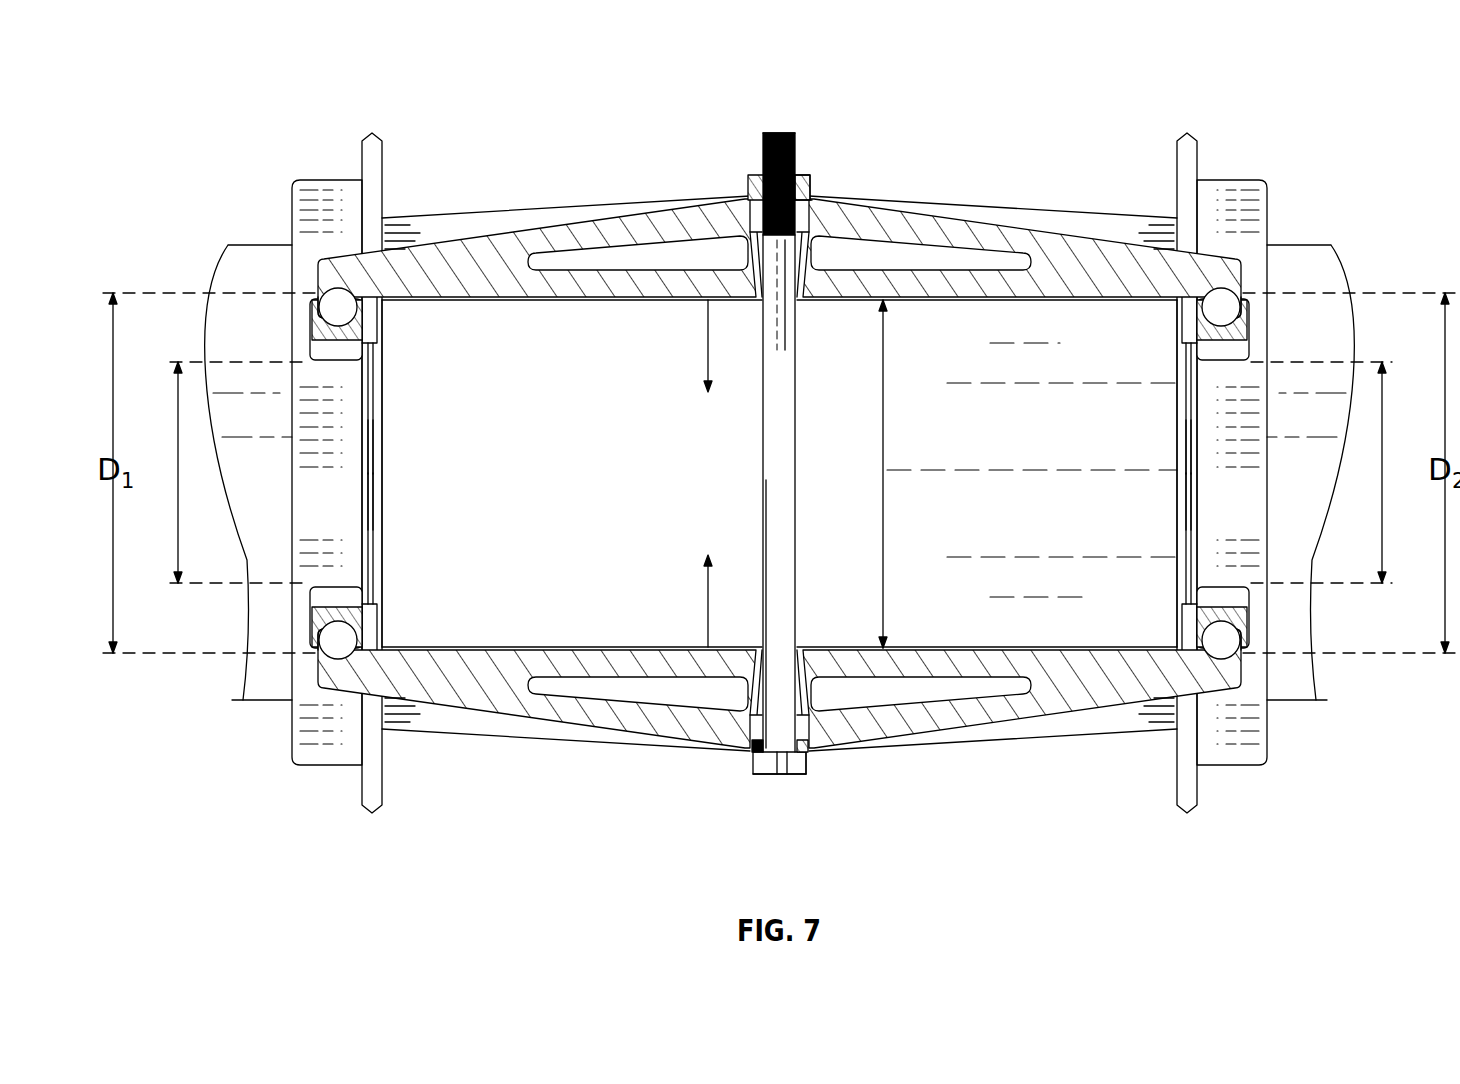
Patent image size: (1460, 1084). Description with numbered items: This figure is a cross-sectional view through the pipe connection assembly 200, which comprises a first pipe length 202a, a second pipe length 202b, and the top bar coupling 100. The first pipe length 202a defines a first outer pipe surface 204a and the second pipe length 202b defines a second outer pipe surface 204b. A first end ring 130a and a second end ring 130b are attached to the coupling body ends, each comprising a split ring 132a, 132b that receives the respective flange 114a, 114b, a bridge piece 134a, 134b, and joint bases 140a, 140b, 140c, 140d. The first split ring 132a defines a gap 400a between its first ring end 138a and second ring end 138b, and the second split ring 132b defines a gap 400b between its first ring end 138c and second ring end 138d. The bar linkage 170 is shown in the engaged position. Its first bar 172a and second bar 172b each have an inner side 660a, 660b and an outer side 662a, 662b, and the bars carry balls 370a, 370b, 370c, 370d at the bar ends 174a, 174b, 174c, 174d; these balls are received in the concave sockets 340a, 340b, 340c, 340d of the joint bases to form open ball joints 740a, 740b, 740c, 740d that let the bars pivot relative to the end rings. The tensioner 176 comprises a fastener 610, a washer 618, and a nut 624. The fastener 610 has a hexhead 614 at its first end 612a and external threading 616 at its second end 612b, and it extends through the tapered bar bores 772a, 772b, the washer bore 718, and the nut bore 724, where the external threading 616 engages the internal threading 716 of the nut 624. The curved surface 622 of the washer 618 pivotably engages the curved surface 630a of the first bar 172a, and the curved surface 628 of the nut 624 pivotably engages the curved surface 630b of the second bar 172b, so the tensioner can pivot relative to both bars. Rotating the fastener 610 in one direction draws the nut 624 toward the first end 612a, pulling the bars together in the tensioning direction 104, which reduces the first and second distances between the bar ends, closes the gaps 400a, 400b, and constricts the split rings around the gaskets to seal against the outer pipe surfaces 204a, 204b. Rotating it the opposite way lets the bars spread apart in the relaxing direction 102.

The top bar coupling 100 is at (985, 136).
The pipe connection assembly 200 is at (178, 99).
The relaxing direction 102 is at (884, 473).
The tensioning direction 104 is at (706, 318).
The first flange 114a is at (381, 455).
The second flange 114b is at (1185, 467).
The first end ring 130a is at (332, 182).
The second end ring 130b is at (1283, 152).
The first split ring 132a is at (296, 215).
The second split ring 132b is at (1270, 212).
The bridge piece 134a is at (374, 502).
The bridge piece 134b is at (1200, 508).
The first ring end 138a is at (372, 585).
The second ring end 138b is at (372, 362).
The first ring end 138c is at (1223, 583).
The second ring end 138d is at (1215, 375).
The joint base 140a is at (378, 600).
The joint base 140b is at (376, 358).
The joint base 140c is at (1185, 565).
The joint base 140d is at (1200, 362).
The bar linkage 170 is at (784, 535).
The tensioner 176 is at (784, 477).
The first bar 172a is at (498, 720).
The second bar 172b is at (527, 238).
The first bar end 174a is at (336, 690).
The first bar end 174b is at (330, 290).
The second bar end 174c is at (1244, 655).
The second bar end 174d is at (1224, 278).
The first pipe length 202a is at (236, 252).
The second pipe length 202b is at (1322, 247).
The first outer pipe surface 204a is at (240, 701).
The second outer pipe surface 204b is at (1322, 701).
The concave socket 340a is at (380, 630).
The concave socket 340b is at (378, 328).
The concave socket 340c is at (1210, 608).
The concave socket 340d is at (1181, 328).
The ball 370a is at (330, 625).
The ball 370b is at (330, 330).
The ball 370c is at (1226, 622).
The ball 370d is at (1230, 325).
The gap 400a is at (228, 472).
The gap 400b is at (1329, 472).
The fastener 610 is at (765, 430).
The first end 612a is at (800, 776).
The second end 612b is at (765, 133).
The hexhead 614 is at (768, 776).
The external threading 616 is at (795, 133).
The washer 618 is at (806, 746).
The curved surface 622 is at (742, 738).
The nut 624 is at (812, 183).
The curved surface 628 is at (742, 212).
The curved surface 630a is at (755, 764).
The curved surface 630b is at (752, 183).
The inner side 660a is at (650, 648).
The inner side 660b is at (507, 300).
The outer side 662a is at (588, 736).
The outer side 662b is at (588, 214).
The internal threading 716 is at (797, 180).
The washer bore 718 is at (808, 762).
The nut bore 724 is at (806, 198).
The ball joint 740a is at (330, 642).
The ball joint 740b is at (330, 305).
The ball joint 740c is at (1230, 641).
The ball joint 740d is at (1228, 304).
The bar bore 772a is at (800, 646).
The bar bore 772b is at (800, 301).